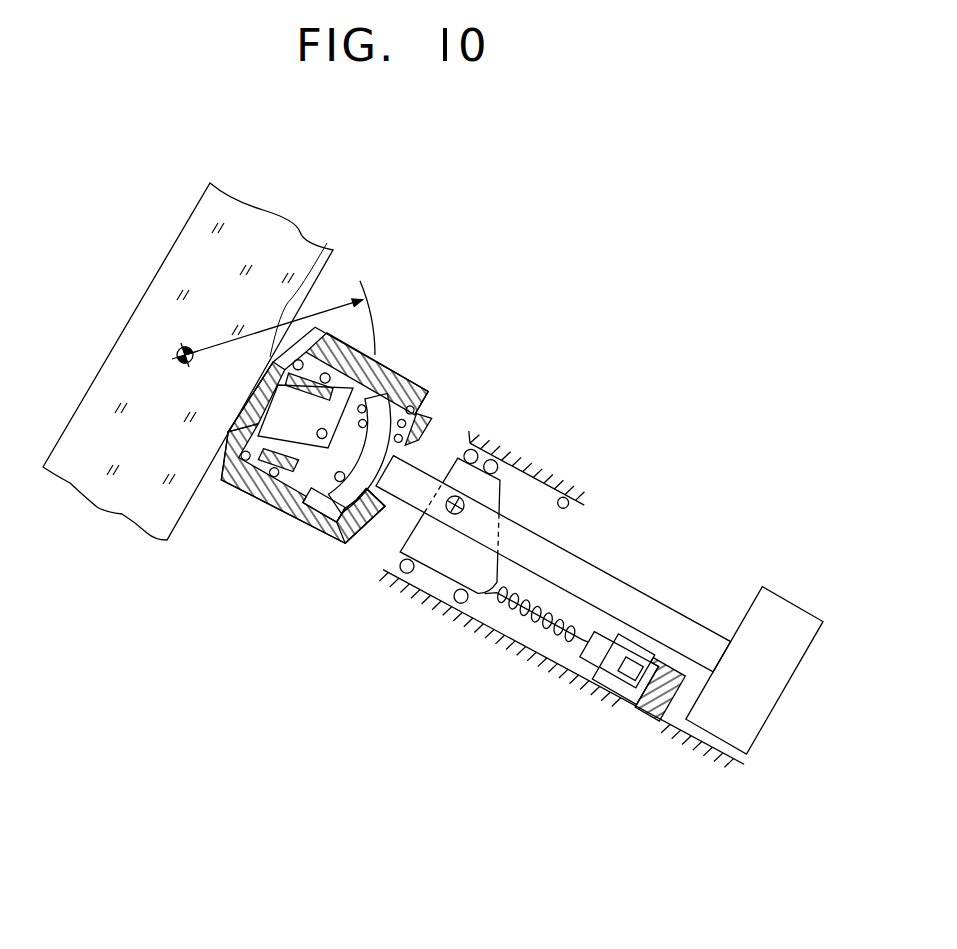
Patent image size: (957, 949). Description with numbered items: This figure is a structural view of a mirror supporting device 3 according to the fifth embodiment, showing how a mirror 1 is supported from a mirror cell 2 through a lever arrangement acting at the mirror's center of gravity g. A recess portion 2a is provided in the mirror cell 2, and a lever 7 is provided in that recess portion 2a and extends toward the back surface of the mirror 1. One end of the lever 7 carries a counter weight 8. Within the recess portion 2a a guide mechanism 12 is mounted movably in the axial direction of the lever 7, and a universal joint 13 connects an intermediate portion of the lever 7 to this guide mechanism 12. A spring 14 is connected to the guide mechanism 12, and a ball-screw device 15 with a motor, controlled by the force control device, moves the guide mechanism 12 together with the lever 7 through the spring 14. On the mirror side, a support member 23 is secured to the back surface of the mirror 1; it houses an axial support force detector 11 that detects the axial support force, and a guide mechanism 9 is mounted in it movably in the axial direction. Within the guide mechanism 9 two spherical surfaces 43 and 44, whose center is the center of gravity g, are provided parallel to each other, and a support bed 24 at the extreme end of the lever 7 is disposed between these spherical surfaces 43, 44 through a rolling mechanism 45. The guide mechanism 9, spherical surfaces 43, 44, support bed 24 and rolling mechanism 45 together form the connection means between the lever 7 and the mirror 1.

The mirror 1 is at (97, 507).
The center of gravity of the mirror g is at (177, 356).
The support member 23 is at (330, 250).
The guide mechanism 9 is at (265, 507).
The axial support force detector 11 is at (240, 496).
The spherical surface 44 is at (400, 375).
The support bed 24 is at (420, 386).
The spherical surface 43 is at (414, 414).
The rolling mechanism 45 is at (312, 510).
The mirror supporting device 3 is at (589, 621).
The lever 7 is at (400, 505).
The counter weight 8 is at (717, 743).
The guide mechanism 12 is at (470, 583).
The universal joint 13 is at (431, 540).
The recess portion 2a is at (572, 500).
The mirror cell 2 is at (395, 587).
The spring 14 is at (547, 623).
The ball-screw device 15 is at (610, 700).